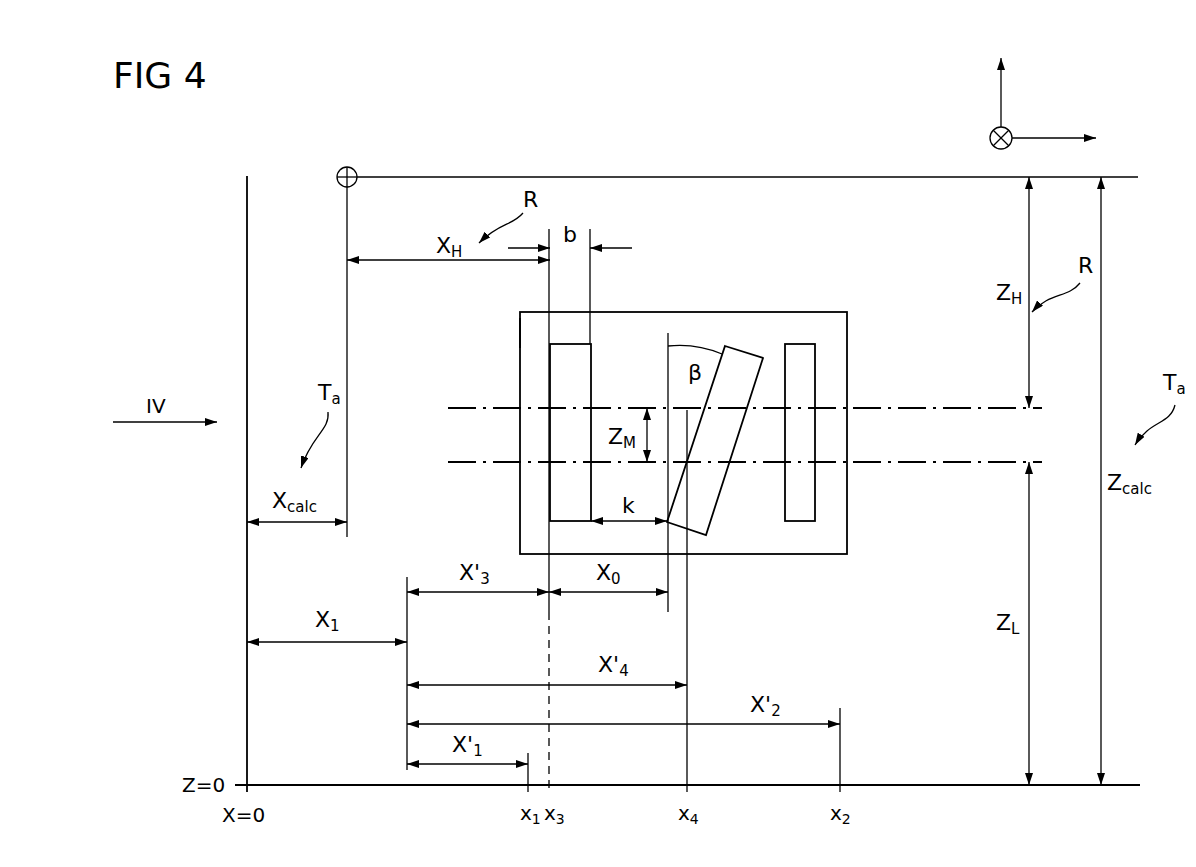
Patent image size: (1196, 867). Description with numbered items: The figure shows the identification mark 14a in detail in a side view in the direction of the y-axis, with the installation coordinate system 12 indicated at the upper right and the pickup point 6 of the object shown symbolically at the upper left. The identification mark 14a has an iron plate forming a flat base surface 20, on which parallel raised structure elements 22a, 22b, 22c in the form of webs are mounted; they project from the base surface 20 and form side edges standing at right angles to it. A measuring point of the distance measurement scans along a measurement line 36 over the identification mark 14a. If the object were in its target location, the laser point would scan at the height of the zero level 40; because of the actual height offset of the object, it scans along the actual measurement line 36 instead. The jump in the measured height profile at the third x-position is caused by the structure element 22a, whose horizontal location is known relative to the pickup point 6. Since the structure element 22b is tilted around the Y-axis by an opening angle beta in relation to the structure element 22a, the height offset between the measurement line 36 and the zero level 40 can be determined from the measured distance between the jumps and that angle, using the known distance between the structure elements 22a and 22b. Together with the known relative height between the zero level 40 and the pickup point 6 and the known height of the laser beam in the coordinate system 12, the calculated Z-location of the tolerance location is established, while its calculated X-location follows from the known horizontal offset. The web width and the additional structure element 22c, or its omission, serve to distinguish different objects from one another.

The pickup point 6 is at (363, 166).
The installation coordinate system 12 is at (1037, 137).
The identification mark 14a is at (526, 333).
The base surface 20 is at (640, 318).
The structure element 22a is at (591, 376).
The structure element 22b is at (711, 496).
The structure element 22c is at (800, 343).
The measurement line 36 is at (900, 466).
The zero level 40 is at (464, 406).